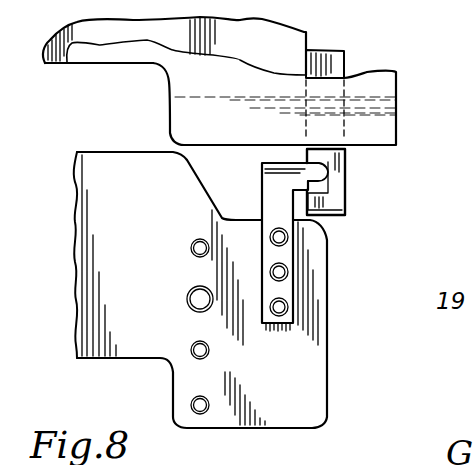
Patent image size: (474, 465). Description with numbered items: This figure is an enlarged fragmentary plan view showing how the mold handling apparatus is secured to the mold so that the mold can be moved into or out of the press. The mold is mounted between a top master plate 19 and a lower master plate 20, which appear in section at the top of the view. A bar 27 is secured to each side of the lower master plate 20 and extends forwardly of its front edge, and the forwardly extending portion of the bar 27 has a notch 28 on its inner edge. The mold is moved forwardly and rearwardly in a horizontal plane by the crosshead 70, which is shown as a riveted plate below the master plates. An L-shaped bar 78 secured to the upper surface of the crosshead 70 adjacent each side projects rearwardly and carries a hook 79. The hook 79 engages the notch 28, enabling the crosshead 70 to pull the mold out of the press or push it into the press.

The top master plate 19 is at (396, 110).
The lower master plate 20 is at (282, 42).
The bar 27 is at (346, 58).
The notch 28 is at (317, 178).
The crosshead 70 is at (98, 224).
The L-shaped bar 78 is at (280, 257).
The hook 79 is at (288, 172).